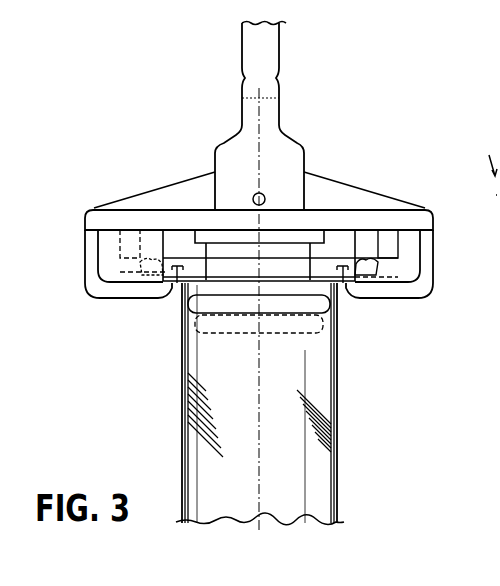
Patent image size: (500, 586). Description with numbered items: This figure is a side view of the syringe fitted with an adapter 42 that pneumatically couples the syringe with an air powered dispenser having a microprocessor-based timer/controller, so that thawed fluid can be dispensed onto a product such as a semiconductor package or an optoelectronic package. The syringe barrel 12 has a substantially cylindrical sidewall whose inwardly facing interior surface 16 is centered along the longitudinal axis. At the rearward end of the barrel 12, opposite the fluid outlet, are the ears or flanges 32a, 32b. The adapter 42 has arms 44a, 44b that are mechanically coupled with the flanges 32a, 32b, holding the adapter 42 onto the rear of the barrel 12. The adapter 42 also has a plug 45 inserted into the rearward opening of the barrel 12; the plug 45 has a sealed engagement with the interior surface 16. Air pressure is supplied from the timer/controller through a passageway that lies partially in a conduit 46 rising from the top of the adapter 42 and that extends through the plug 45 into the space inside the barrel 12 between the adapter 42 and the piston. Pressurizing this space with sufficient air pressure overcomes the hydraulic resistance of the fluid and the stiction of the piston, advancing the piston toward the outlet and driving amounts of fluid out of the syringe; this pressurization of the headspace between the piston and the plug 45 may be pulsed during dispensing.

The conduit 46 is at (277, 42).
The adapter 42 is at (306, 150).
The arm 44a is at (85, 258).
The arm 44b is at (433, 265).
The flange 32a is at (172, 284).
The flange 32b is at (343, 284).
The plug 45 is at (325, 320).
The barrel 12 is at (183, 360).
The interior surface 16 is at (332, 370).